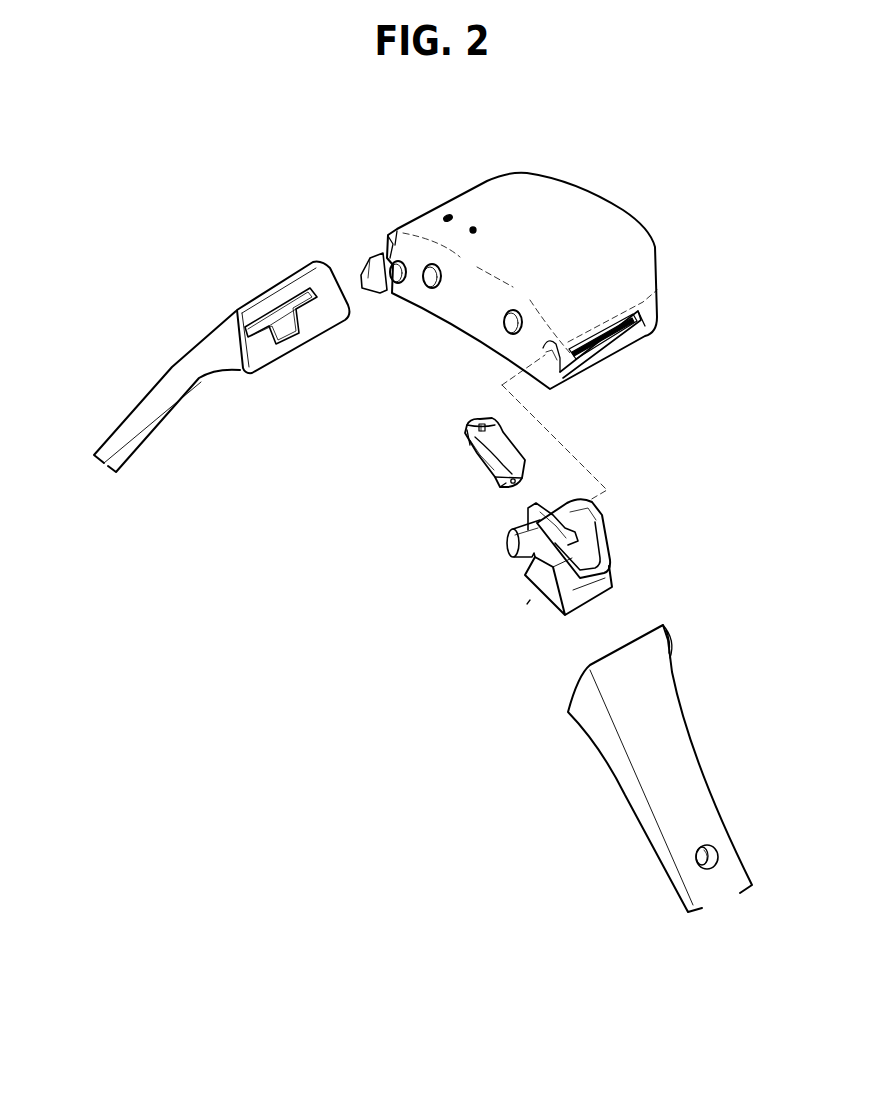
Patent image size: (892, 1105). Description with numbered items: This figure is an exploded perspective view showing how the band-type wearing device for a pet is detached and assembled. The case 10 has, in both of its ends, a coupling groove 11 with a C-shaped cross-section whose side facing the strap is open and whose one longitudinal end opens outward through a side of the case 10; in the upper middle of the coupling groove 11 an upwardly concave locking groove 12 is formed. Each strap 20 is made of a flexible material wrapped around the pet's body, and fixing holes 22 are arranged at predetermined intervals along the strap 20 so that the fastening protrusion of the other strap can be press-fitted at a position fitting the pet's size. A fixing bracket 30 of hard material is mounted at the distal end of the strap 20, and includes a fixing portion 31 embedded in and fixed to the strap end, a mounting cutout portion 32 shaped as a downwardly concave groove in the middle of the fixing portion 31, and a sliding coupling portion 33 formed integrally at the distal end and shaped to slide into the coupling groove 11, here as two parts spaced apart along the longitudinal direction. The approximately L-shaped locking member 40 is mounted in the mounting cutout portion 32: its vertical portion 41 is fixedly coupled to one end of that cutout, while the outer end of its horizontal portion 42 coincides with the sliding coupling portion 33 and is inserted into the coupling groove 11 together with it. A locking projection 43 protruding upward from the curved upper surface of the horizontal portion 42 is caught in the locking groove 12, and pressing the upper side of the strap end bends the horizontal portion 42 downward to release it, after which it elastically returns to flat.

The case 10 is at (578, 200).
The coupling groove 11 is at (396, 230).
The locking groove 12 is at (608, 333).
The strap 20 is at (208, 338).
The fixing hole 22 is at (712, 853).
The fixing bracket 30 is at (540, 598).
The fixing portion 31 is at (373, 268).
The mounting cutout portion 32 is at (588, 556).
The sliding coupling portion 33 is at (529, 530).
The locking member 40 is at (526, 458).
The vertical portion 41 is at (498, 494).
The horizontal portion 42 is at (478, 456).
The locking projection 43 is at (487, 427).